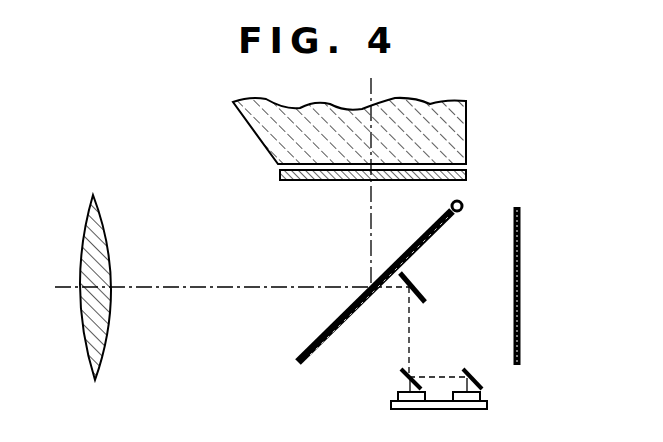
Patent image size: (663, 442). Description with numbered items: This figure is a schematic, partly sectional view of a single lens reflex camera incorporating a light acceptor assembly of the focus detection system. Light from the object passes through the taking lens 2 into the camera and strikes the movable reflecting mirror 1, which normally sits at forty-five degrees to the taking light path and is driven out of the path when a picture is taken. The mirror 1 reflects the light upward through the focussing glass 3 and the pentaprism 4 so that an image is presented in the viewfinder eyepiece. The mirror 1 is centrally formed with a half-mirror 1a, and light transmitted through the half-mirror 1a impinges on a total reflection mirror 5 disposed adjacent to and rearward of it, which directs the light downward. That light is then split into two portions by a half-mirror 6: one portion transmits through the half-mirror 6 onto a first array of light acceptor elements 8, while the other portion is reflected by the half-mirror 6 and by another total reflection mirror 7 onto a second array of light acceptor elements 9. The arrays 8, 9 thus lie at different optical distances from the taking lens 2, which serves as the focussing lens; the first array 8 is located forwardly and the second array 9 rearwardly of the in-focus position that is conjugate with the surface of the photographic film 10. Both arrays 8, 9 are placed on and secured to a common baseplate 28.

The movable reflecting mirror 1 is at (320, 345).
The half-mirror 1a is at (378, 277).
The taking lens 2 is at (98, 216).
The focussing glass 3 is at (285, 175).
The pentaprism 4 is at (262, 122).
The total reflection mirror 5 is at (418, 288).
The half-mirror 6 is at (401, 376).
The total reflection mirror 7 is at (474, 376).
The first array of light acceptor elements 8 is at (398, 397).
The second array of light acceptor elements 9 is at (481, 397).
The photographic film 10 is at (521, 247).
The common baseplate 28 is at (437, 409).